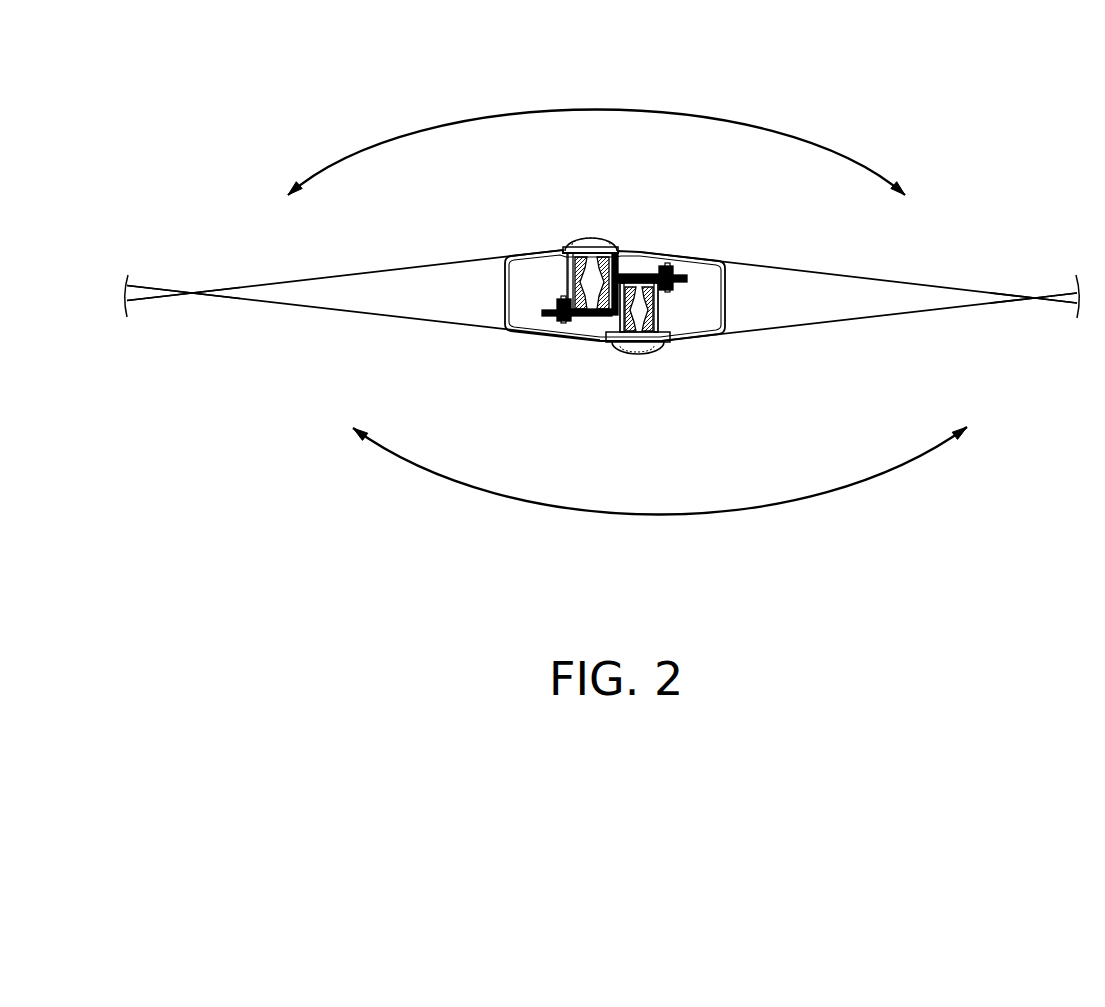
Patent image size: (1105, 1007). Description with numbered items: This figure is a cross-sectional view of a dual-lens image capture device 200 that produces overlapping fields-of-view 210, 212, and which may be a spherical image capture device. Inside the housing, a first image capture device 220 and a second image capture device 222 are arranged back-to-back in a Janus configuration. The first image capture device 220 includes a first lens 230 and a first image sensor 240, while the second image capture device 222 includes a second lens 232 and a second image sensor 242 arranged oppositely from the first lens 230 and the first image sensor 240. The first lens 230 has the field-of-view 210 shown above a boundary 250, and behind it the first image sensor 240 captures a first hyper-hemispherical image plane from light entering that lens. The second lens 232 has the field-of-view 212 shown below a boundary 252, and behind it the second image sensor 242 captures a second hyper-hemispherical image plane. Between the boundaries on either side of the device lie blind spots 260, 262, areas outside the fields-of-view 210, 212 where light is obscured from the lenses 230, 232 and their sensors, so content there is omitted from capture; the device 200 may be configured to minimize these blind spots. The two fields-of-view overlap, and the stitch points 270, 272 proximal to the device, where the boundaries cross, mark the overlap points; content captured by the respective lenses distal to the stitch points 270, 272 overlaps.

The image capture device 200 is at (502, 302).
The first field-of-view 210 is at (650, 110).
The second field-of-view 212 is at (660, 517).
The first image capture device 220 is at (566, 250).
The second image capture device 222 is at (665, 340).
The first lens 230 is at (592, 238).
The second lens 232 is at (642, 352).
The first image sensor 240 is at (595, 318).
The second image sensor 242 is at (640, 275).
The boundary 250 is at (356, 274).
The boundary 252 is at (386, 316).
The blind spot 260 is at (438, 297).
The blind spot 262 is at (783, 297).
The stitch point 270 is at (190, 296).
The stitch point 272 is at (1035, 300).